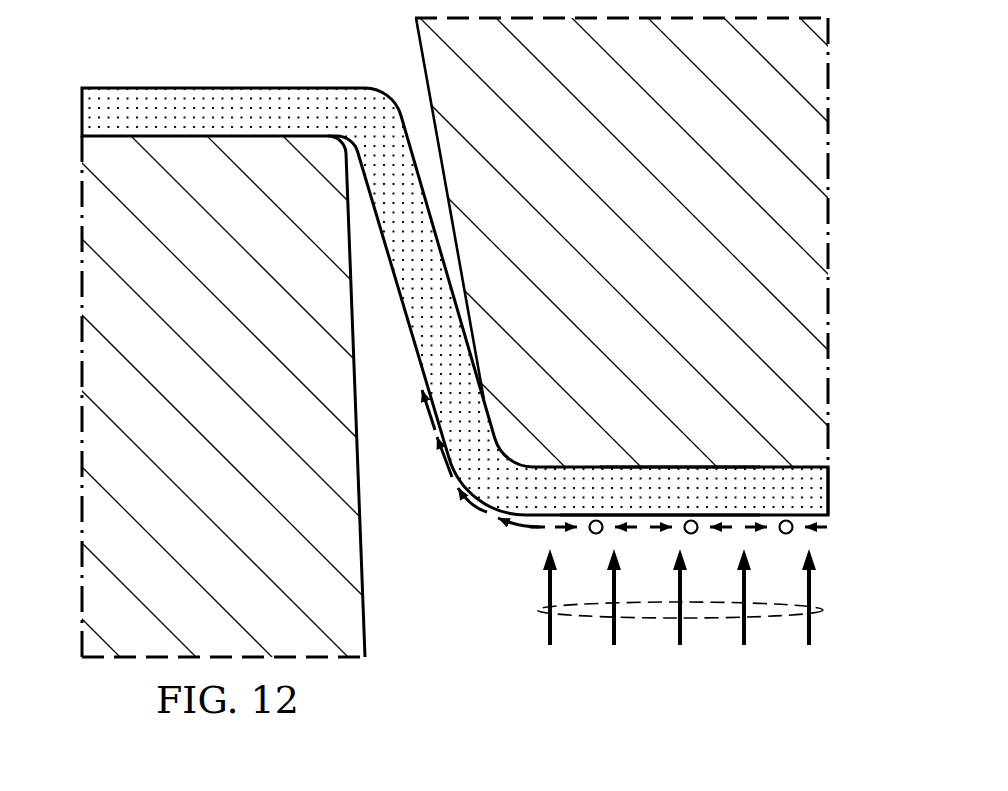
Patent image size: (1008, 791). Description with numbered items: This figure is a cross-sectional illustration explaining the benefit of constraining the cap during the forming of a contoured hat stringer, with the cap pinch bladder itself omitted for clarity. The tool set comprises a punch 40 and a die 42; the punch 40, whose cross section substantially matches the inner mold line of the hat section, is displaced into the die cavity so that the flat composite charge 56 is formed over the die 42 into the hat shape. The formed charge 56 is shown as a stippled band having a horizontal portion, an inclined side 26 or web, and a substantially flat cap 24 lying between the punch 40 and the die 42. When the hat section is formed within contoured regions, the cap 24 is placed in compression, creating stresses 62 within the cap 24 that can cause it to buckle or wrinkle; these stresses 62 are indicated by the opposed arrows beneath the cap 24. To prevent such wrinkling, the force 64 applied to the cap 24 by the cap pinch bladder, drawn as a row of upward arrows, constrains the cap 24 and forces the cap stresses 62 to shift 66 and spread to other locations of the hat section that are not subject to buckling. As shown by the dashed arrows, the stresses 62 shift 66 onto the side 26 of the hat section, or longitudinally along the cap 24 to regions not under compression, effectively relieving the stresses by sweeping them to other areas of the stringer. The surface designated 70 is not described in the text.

The punch 40 is at (818, 143).
The die 42 is at (90, 288).
The inclined side 26 is at (418, 343).
The seal upper surface 70 is at (686, 463).
The flat composite charge 56 is at (826, 492).
The cap 24 is at (645, 518).
The shift 66 is at (478, 500).
The stresses 62 is at (828, 530).
The force 64 is at (823, 610).